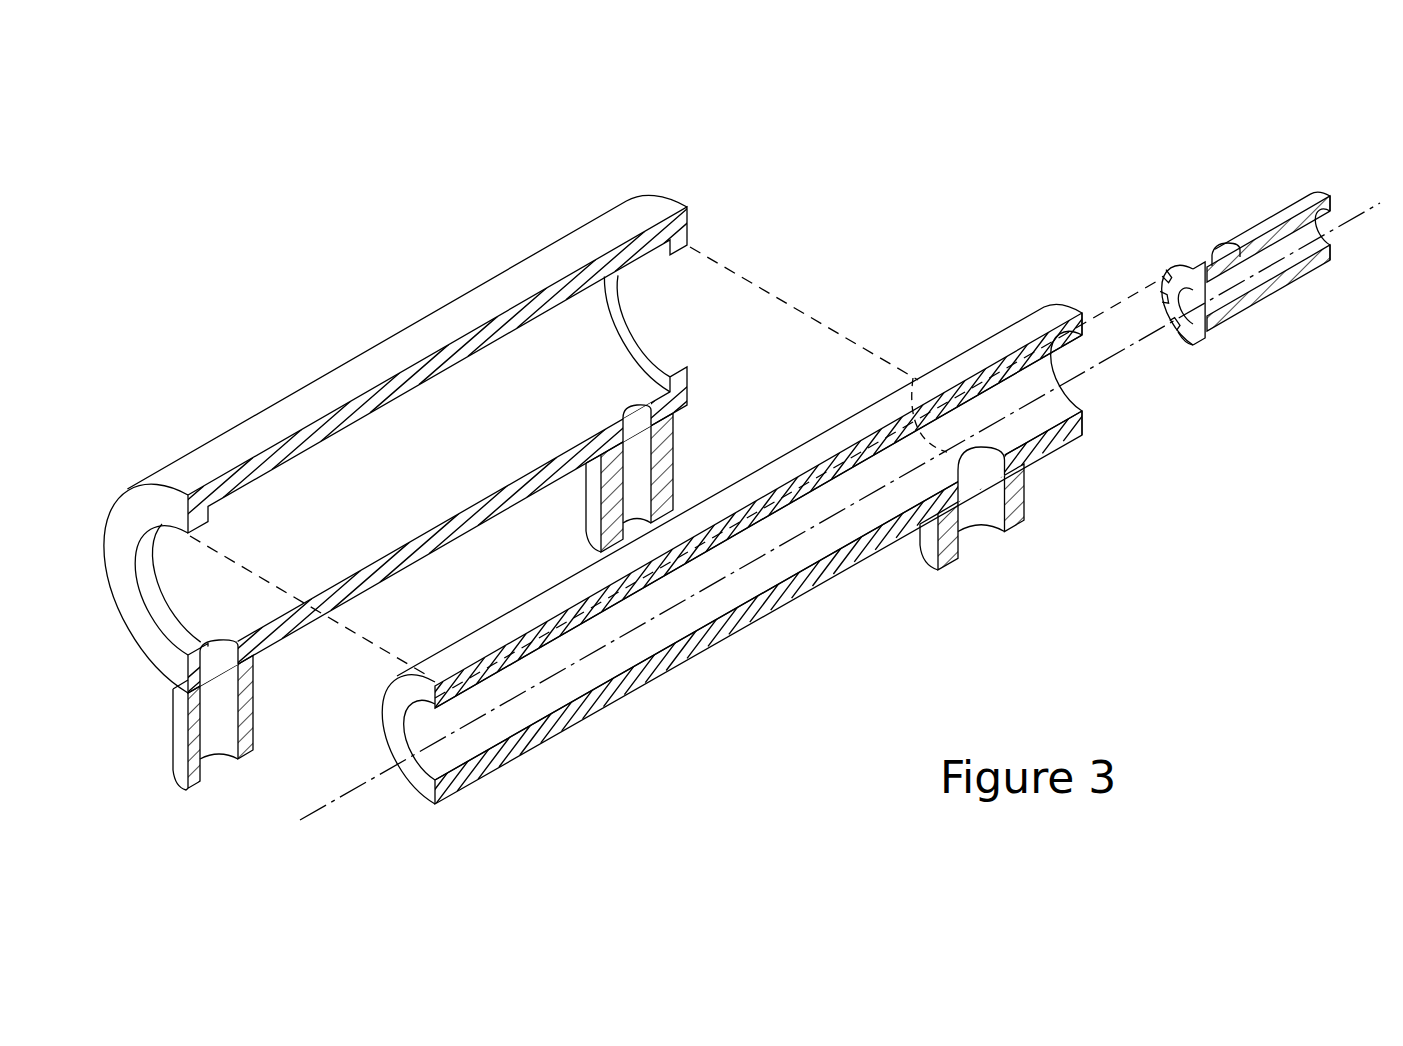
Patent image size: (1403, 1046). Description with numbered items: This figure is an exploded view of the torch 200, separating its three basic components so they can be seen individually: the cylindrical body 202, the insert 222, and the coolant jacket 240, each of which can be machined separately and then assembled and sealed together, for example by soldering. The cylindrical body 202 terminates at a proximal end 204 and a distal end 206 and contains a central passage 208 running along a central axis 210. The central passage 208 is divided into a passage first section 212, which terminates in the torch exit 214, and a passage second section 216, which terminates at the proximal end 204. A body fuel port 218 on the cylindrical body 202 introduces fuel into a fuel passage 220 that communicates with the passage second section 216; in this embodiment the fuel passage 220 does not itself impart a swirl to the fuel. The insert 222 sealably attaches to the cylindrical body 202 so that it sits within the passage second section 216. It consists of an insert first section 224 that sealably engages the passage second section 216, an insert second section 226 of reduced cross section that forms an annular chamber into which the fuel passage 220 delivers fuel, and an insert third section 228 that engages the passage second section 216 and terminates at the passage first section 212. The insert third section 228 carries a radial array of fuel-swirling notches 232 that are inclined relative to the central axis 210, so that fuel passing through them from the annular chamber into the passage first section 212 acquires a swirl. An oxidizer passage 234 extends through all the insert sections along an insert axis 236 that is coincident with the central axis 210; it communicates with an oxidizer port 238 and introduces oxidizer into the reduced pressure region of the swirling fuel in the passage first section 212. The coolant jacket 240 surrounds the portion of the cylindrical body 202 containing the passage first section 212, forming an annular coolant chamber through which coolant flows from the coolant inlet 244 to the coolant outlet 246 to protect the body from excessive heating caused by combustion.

The torch 200 is at (372, 188).
The cylindrical body 202 is at (805, 441).
The proximal end 204 is at (1060, 316).
The distal end 206 is at (412, 776).
The central passage 208 is at (860, 536).
The central axis 210 is at (688, 600).
The passage first section 212 is at (603, 665).
The torch exit 214 is at (410, 735).
The passage second section 216 is at (982, 423).
The body fuel port 218 is at (977, 538).
The fuel passage 220 is at (986, 488).
The insert 222 is at (1190, 220).
The insert first section 224 is at (1282, 213).
The insert second section 226 is at (1220, 255).
The insert third section 228 is at (1203, 347).
The fuel-swirling notches 232 is at (1170, 318).
The oxidizer passage 234 is at (1252, 278).
The insert axis 236 is at (1143, 340).
The oxidizer port 238 is at (1327, 227).
The coolant jacket 240 is at (286, 390).
The coolant inlet 244 is at (640, 468).
The coolant outlet 246 is at (215, 730).